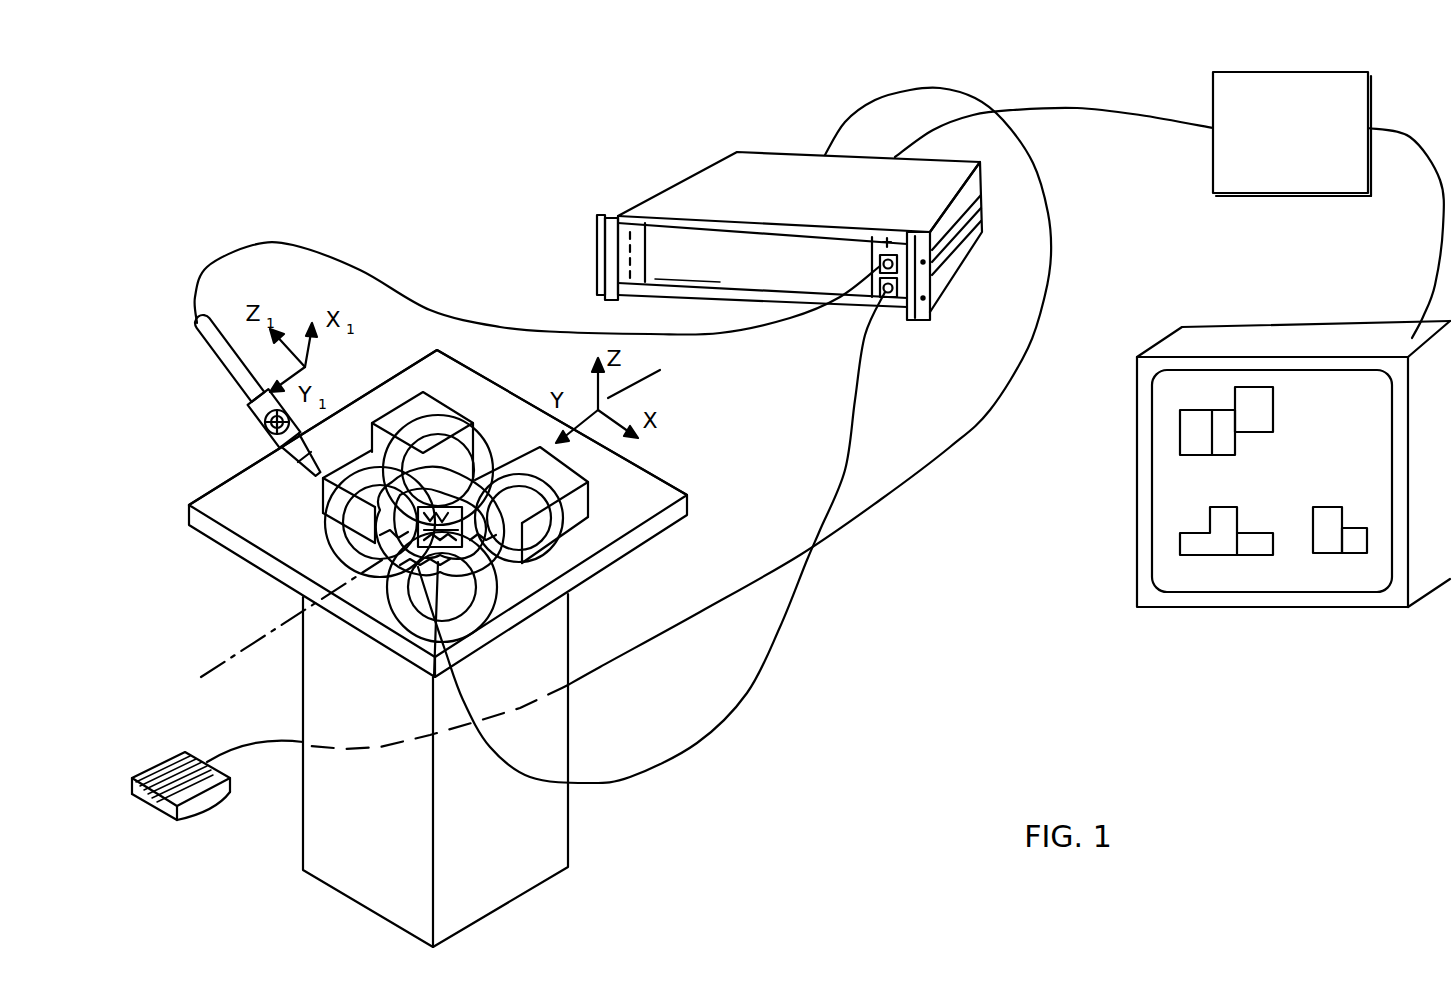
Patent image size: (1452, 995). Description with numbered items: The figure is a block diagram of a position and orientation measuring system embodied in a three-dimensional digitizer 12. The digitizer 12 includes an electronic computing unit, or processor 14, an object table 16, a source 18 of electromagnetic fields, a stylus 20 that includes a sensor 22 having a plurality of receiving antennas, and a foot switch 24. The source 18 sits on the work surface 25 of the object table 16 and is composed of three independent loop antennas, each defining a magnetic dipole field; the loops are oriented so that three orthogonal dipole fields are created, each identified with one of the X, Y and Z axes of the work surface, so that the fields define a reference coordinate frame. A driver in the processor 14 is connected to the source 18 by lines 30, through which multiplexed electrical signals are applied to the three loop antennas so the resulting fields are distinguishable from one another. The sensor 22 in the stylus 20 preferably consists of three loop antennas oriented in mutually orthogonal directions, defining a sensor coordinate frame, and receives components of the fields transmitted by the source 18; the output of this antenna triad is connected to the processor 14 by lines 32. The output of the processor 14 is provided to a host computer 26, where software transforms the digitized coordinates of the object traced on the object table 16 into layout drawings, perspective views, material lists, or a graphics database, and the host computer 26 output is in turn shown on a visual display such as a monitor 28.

The three-dimensional digitizer 12 is at (930, 533).
The processor 14 is at (720, 177).
The object table 16 is at (647, 472).
The source 18 is at (416, 565).
The stylus 20 is at (213, 343).
The sensor 22 is at (257, 418).
The foot switch 24 is at (210, 792).
The table surface 25 is at (609, 510).
The host computer 26 is at (1353, 105).
The monitor 28 is at (1302, 337).
The lines 30 is at (866, 396).
The lines 32 is at (427, 306).